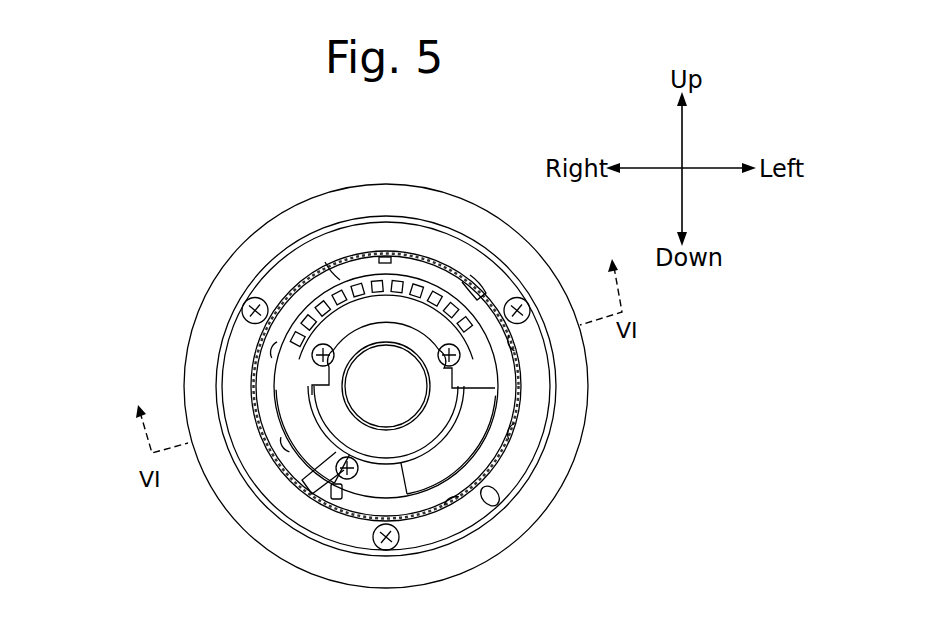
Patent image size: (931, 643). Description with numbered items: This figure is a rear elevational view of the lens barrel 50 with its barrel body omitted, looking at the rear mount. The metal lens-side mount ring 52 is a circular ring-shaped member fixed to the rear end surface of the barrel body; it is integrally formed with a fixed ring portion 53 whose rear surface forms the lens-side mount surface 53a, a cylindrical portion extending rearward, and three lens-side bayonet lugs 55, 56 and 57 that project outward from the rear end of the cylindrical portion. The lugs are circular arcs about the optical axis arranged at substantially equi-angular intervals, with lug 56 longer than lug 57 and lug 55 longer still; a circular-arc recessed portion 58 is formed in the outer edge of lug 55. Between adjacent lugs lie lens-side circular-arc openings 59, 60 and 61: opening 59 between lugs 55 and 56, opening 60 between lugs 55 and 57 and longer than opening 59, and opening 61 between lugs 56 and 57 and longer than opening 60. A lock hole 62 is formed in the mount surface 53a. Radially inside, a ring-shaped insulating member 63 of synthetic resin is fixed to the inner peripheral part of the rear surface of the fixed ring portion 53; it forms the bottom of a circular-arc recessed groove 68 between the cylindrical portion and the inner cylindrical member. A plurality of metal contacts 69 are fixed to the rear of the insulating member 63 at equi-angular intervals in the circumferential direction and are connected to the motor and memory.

The lens unit 50 is at (156, 266).
The lens-side mount ring 52 is at (232, 356).
The fixed ring portion 53 is at (472, 386).
The lens-side mount surface 53a is at (535, 432).
The lens-side bayonet lug 55 is at (477, 298).
The lens-side bayonet lug 56 is at (418, 507).
The lens-side bayonet lug 57 is at (298, 290).
The recessed portion 58 is at (510, 355).
The lens-side circular-arc opening 59 is at (497, 452).
The lens-side circular-arc opening 60 is at (352, 262).
The lens-side circular-arc opening 61 is at (285, 456).
The lock hole 62 is at (496, 502).
The insulating member 63 is at (319, 463).
The recessed groove 68 is at (292, 422).
The contacts 69 is at (294, 336).